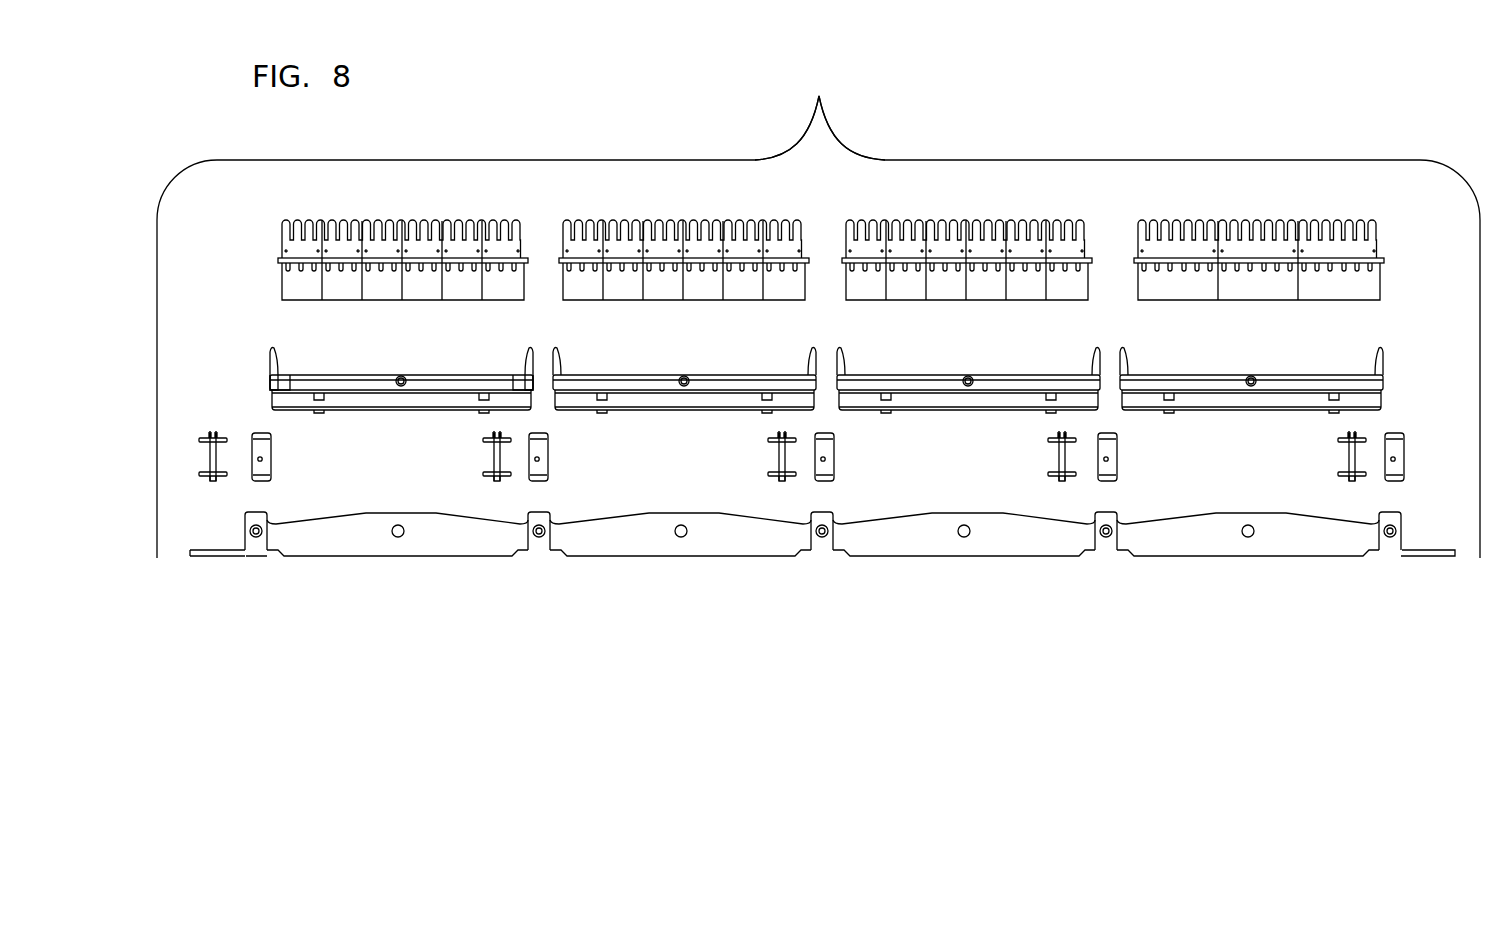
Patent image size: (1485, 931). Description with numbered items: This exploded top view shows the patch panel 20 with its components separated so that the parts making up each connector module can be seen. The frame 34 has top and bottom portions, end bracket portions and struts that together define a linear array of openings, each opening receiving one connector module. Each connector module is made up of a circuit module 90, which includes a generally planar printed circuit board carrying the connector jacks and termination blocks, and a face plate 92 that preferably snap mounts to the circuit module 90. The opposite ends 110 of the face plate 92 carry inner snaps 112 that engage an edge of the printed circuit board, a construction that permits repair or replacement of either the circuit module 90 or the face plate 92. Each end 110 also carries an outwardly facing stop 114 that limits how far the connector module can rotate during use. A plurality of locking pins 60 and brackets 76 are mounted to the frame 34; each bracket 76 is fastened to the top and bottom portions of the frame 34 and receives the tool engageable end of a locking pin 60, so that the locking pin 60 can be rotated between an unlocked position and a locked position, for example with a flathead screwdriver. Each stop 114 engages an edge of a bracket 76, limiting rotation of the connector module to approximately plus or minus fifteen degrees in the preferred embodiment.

The cutter bar assembly 20 is at (819, 96).
The circuit module 90 is at (412, 222).
The face plate 92 is at (335, 412).
The opposite ends of face plate 110 is at (269, 377).
The inner snaps 112 is at (277, 362).
The outwardly facing stops 114 is at (271, 354).
The locking pin 60 is at (210, 459).
The bracket 76 is at (272, 459).
The frame 34 is at (848, 527).